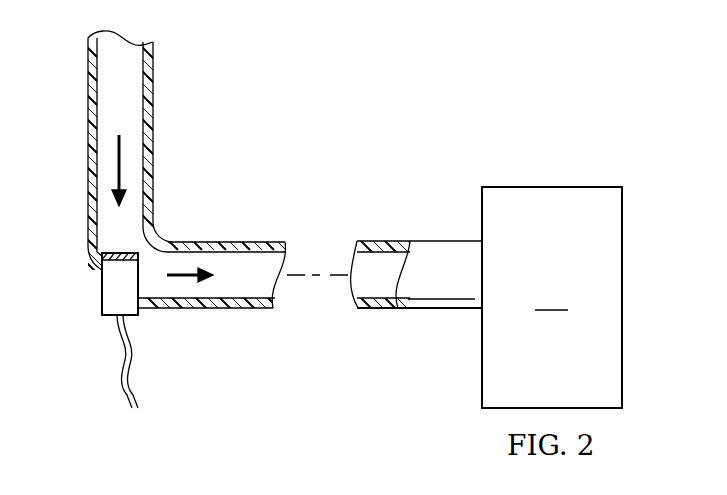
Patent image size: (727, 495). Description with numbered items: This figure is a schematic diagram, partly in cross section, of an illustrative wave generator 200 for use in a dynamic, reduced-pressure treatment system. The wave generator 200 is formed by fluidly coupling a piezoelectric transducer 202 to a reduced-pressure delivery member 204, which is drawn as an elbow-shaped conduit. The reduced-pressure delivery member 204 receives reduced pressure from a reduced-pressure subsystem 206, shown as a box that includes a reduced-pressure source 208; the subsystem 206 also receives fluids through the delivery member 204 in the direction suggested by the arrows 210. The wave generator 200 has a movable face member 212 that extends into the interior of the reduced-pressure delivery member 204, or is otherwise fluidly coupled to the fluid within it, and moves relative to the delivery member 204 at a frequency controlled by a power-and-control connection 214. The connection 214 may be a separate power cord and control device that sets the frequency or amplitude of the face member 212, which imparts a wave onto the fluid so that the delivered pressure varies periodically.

The wave generator 200 is at (98, 298).
The piezoelectric transducer 202 is at (109, 318).
The reduced-pressure delivery member 204 is at (88, 87).
The reduced-pressure subsystem 206 is at (569, 184).
The reduced-pressure source 208 is at (551, 300).
The arrows 210 is at (123, 160).
The movable face member 212 is at (106, 252).
The power-and-control connection 214 is at (123, 390).